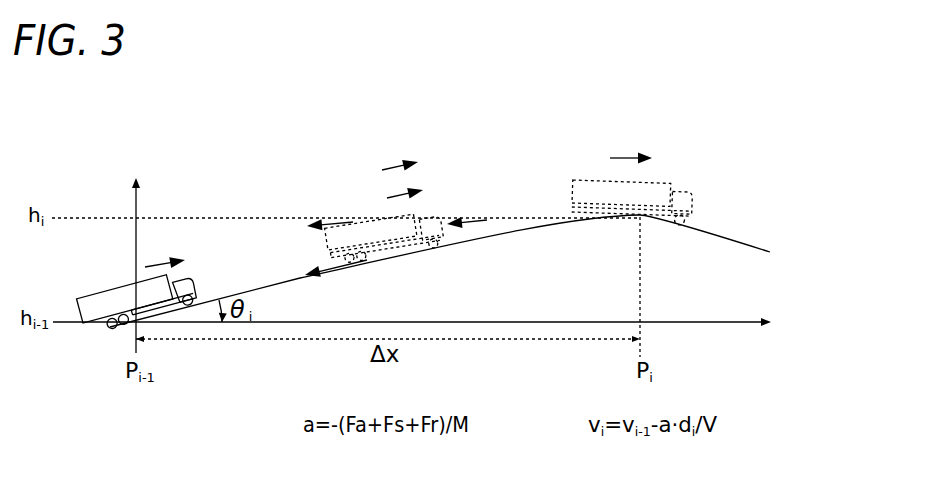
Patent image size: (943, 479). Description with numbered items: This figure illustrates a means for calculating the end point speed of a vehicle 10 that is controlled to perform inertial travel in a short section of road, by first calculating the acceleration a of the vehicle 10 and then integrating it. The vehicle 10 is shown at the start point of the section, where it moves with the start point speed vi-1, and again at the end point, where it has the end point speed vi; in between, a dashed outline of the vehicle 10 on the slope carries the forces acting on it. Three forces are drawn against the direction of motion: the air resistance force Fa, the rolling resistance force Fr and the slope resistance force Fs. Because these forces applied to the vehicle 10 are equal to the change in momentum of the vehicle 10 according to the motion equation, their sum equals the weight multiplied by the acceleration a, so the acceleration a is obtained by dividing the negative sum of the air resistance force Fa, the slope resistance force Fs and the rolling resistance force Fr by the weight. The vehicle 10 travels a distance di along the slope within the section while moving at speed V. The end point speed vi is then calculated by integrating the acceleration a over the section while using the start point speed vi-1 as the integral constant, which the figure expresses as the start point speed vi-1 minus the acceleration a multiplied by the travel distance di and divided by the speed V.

The vehicle 10 is at (101, 288).
The air resistance force Fa is at (477, 211).
The slope resistance force Fs is at (336, 212).
The rolling resistance force Fr is at (335, 277).
The acceleration a is at (410, 157).
The vehicle speed V is at (415, 186).
The end point speed vi is at (641, 166).
The start point speed vi-1 is at (181, 258).
The travel distance di is at (427, 240).